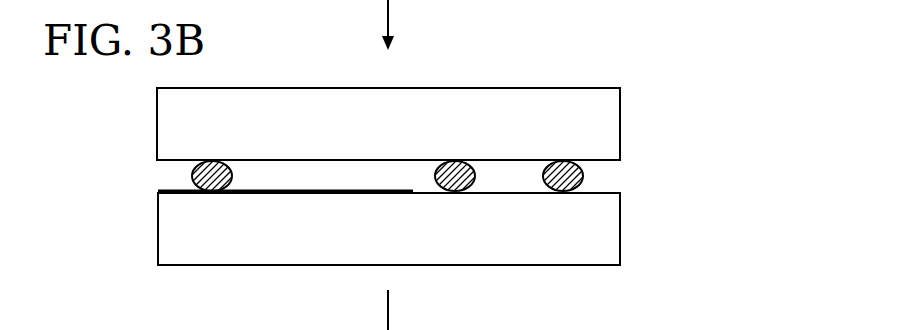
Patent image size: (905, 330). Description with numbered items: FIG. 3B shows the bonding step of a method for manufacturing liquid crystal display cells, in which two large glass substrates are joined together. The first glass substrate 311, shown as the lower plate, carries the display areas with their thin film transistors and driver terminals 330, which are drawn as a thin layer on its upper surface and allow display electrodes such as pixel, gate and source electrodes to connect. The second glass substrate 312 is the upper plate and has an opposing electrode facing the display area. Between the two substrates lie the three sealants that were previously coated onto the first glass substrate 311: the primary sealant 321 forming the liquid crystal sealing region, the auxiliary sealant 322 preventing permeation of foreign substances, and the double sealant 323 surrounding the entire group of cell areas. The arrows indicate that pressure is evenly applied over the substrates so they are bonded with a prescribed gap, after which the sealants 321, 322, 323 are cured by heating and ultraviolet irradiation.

The first glass substrate 311 is at (603, 225).
The second glass substrate 312 is at (467, 98).
The primary sealant 321 is at (192, 175).
The auxiliary sealant 322 is at (462, 172).
The double sealant 323 is at (582, 175).
The driver terminals 330 is at (170, 195).